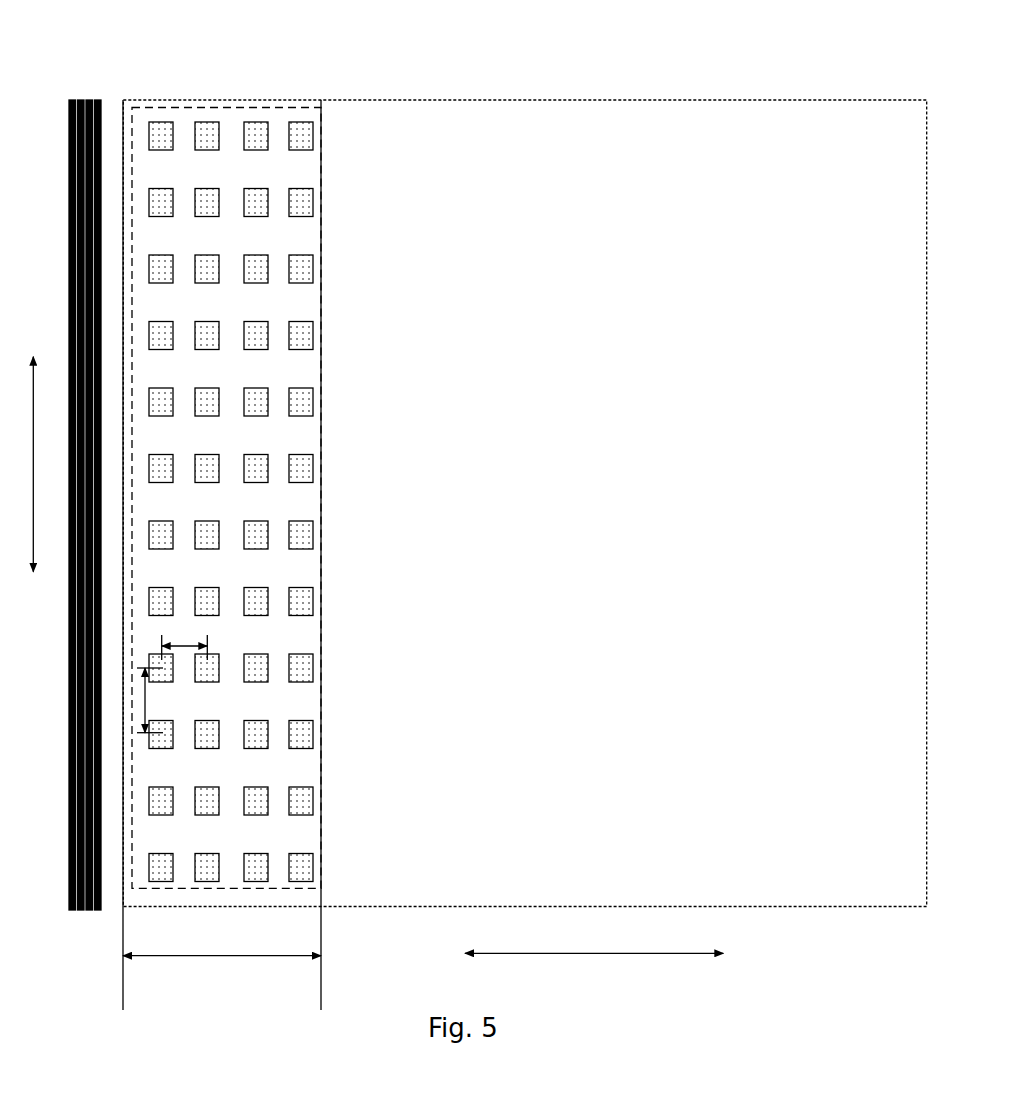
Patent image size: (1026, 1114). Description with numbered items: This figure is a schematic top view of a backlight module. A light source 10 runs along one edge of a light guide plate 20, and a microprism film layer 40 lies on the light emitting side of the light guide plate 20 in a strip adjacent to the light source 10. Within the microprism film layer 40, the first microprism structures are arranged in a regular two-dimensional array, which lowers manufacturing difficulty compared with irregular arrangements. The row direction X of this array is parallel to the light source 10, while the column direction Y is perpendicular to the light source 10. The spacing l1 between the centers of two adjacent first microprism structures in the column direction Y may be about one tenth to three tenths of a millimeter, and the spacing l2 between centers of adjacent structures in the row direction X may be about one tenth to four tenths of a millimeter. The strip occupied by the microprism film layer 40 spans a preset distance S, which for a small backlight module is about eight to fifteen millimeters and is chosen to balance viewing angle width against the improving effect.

The light source 10 is at (63, 458).
The light guide plate 20 is at (524, 470).
The microprism film layer 40 is at (226, 447).
The spacing between centers of adjacent first microprism structures in the column di l1 is at (185, 643).
The spacing between centers of adjacent first microprism structures in the row direc l2 is at (152, 700).
The row direction X is at (22, 464).
The column direction Y is at (594, 940).
The preset distance S is at (222, 970).